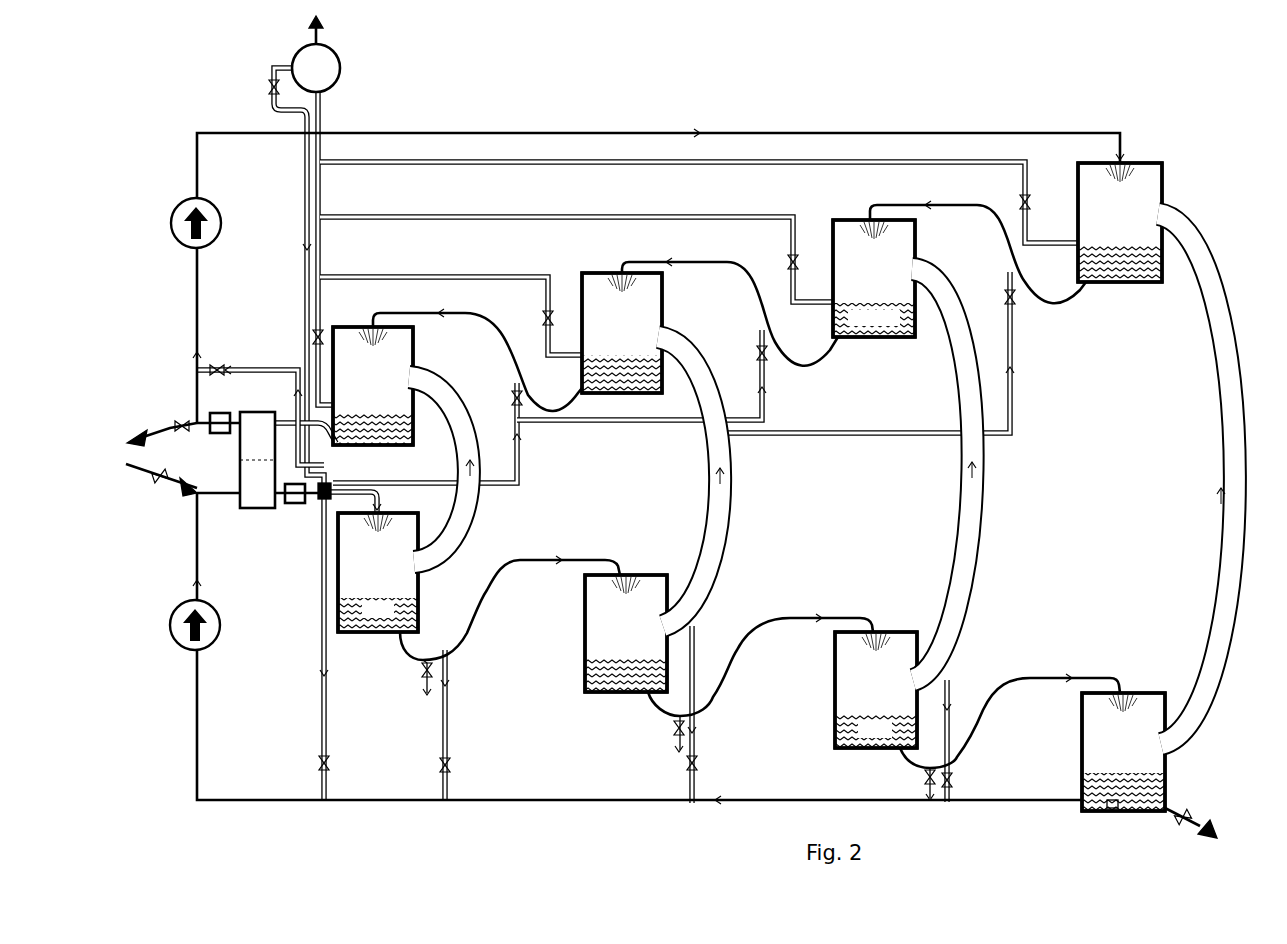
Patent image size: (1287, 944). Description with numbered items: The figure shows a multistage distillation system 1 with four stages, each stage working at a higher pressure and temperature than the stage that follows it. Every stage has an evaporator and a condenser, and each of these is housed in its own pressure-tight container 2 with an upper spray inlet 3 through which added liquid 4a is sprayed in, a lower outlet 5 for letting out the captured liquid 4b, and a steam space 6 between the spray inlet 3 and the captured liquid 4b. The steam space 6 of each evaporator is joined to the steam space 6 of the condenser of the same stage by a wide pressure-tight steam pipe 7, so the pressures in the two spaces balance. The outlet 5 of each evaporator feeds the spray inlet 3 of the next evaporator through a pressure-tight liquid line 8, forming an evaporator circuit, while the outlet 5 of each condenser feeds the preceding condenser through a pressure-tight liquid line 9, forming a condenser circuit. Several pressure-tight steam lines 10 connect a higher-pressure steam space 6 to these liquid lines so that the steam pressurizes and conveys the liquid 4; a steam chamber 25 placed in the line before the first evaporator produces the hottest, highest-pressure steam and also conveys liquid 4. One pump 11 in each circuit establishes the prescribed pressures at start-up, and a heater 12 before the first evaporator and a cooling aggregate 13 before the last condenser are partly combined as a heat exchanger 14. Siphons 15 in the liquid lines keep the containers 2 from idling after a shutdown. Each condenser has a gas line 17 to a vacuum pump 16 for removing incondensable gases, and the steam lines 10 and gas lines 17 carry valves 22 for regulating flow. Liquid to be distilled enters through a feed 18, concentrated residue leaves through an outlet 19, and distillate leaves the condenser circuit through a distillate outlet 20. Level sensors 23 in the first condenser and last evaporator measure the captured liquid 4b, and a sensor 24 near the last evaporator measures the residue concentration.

The multistage distillation system 1 is at (743, 81).
The pressure-tight container 2 is at (415, 340).
The upper spray inlet 3 is at (605, 273).
The liquid 4 is at (532, 558).
The added liquid 4a is at (852, 222).
The captured liquid 4b is at (751, 662).
The lower outlet 5 is at (858, 342).
The steam space 6 is at (660, 318).
The pressure-tight steam pipe 7 is at (718, 560).
The pressure-tight liquid line 8 is at (487, 597).
The pressure-tight liquid line 9 is at (633, 131).
The pressure-tight steam line 10 is at (305, 258).
The pump 11 is at (221, 226).
The heater 12 is at (297, 504).
The cooling aggregate 13 is at (220, 413).
The heat exchanger 14 is at (240, 465).
The siphon 15 is at (553, 408).
The vacuum pump 16 is at (341, 70).
The gas line 17 is at (515, 162).
The feed 18 is at (142, 483).
The outlet 19 is at (420, 684).
The distillate outlet 20 is at (158, 421).
The valve 22 is at (266, 88).
The level sensor 23 is at (347, 412).
The sensor 24 is at (1110, 810).
The steam chamber 25 is at (320, 500).